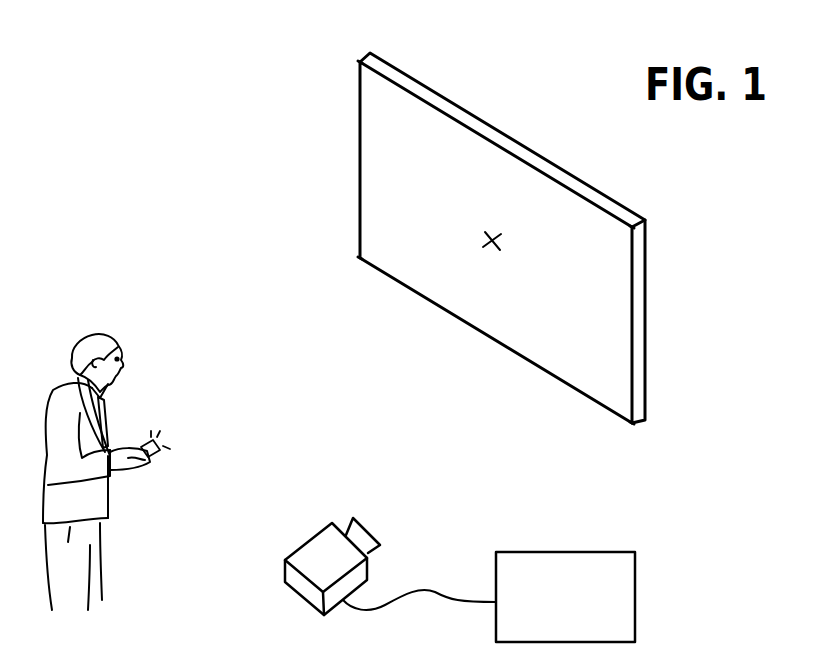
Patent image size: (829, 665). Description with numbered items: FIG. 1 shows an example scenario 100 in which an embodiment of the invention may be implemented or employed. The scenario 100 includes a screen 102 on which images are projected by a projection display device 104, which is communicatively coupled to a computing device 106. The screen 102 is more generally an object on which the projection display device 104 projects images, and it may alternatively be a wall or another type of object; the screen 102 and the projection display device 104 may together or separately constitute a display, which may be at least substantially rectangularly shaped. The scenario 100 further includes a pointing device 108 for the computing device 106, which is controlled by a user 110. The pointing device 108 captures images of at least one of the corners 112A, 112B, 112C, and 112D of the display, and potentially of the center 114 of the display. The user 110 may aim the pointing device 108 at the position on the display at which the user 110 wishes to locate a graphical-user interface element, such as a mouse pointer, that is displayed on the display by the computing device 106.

The scenario 100 is at (198, 169).
The screen 102 is at (592, 272).
The projection display device 104 is at (303, 588).
The computing device 106 is at (620, 552).
The pointing device 108 is at (152, 440).
The user 110 is at (115, 335).
The corner 112A is at (622, 233).
The corner 112B is at (628, 408).
The corner 112C is at (362, 254).
The corner 112D is at (368, 75).
The center 114 is at (493, 245).